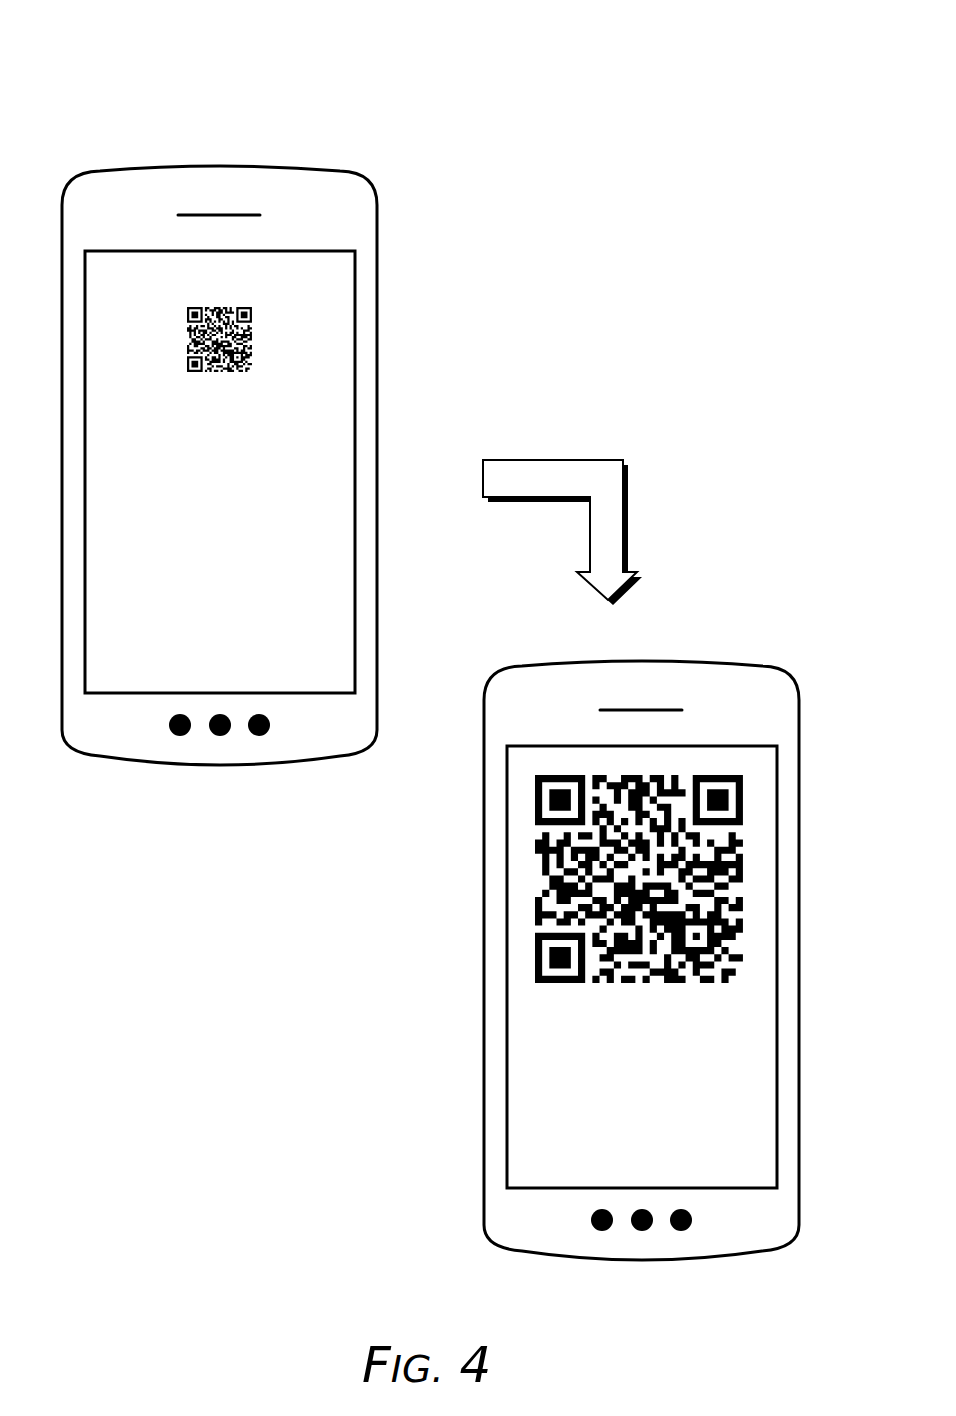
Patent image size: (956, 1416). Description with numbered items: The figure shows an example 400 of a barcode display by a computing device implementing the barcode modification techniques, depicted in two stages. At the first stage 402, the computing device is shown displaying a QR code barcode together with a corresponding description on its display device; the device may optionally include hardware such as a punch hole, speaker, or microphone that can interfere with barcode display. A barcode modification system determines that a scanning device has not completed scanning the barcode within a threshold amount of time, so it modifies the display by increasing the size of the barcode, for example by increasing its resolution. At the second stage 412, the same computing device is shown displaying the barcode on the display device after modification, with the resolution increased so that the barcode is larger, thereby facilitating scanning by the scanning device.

The example 400 is at (780, 78).
The initial display stage 402 is at (275, 445).
The modified display stage 412 is at (674, 940).